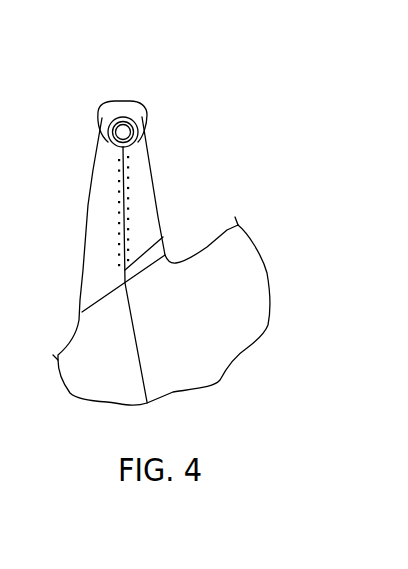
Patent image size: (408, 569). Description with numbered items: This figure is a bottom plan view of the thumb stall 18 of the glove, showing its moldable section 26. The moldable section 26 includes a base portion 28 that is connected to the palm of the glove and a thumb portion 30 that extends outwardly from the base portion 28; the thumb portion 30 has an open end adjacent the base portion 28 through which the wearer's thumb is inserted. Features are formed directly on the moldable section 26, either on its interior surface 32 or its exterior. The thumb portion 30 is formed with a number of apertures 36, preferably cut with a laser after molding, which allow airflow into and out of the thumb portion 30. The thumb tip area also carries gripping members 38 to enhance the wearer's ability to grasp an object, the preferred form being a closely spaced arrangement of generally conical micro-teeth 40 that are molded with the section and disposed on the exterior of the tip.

The thumb stall 18 is at (173, 194).
The moldable section 26 is at (87, 197).
The base portion 28 is at (248, 304).
The thumb portion 30 is at (102, 175).
The interior surface 32 is at (163, 237).
The apertures 36 is at (129, 167).
The gripping members 38 is at (120, 110).
The micro-teeth 40 is at (131, 116).